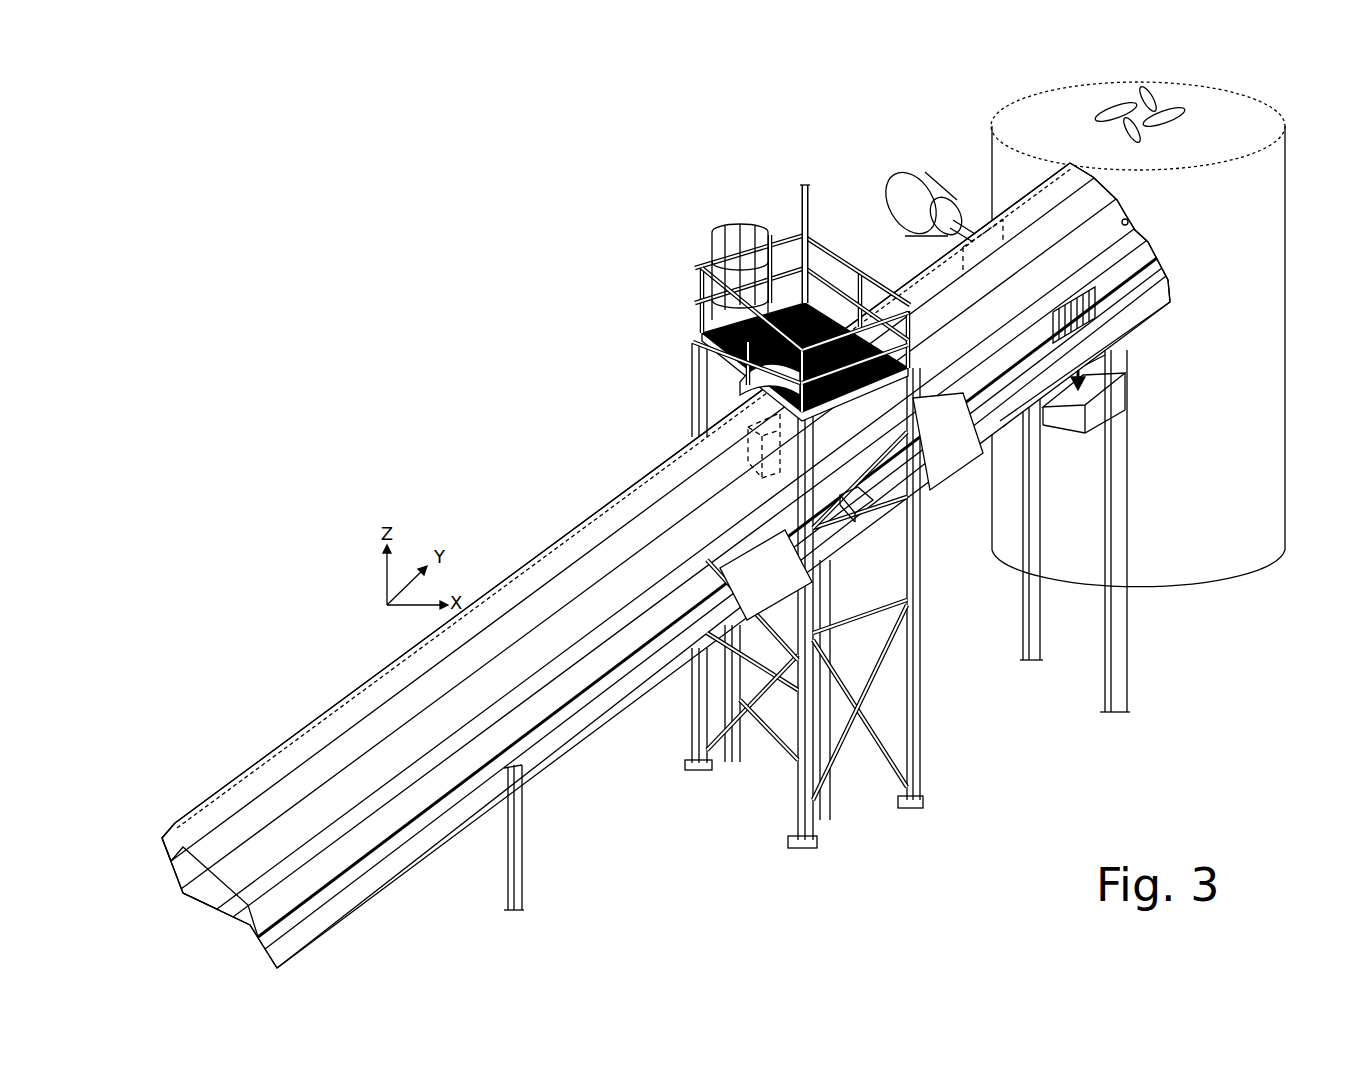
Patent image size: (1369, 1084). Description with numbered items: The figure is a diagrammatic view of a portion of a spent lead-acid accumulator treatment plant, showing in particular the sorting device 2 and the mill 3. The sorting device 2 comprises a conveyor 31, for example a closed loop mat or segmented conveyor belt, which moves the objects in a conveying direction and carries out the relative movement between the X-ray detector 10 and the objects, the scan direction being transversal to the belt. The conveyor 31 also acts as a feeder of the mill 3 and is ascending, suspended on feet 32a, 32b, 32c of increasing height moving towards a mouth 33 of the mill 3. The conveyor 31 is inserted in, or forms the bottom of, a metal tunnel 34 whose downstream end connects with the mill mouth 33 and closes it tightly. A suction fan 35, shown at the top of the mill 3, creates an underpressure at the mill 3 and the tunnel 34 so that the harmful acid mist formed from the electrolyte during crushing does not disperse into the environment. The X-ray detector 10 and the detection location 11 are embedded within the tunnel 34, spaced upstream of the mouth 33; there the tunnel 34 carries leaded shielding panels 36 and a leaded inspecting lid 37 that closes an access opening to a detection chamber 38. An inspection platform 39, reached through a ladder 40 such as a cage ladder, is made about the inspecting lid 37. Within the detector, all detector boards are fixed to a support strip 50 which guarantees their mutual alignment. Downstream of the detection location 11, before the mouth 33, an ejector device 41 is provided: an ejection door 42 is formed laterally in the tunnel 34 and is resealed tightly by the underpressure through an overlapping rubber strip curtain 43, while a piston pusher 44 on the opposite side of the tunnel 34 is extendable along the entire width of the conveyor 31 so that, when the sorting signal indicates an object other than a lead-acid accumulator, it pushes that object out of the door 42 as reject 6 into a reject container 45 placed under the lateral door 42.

The sorting device 2 is at (847, 113).
The mill 3 is at (693, 511).
The reject 6 is at (1088, 350).
The X-ray detector 10 is at (643, 445).
The detection location 11 is at (643, 445).
The detection chamber 38 is at (772, 425).
The conveyor 31 is at (180, 830).
The foot 32a is at (522, 848).
The foot 32b is at (920, 768).
The foot 32c is at (1128, 658).
The mouth 33 is at (1129, 222).
The metal tunnel 34 is at (250, 768).
The suction fan 35 is at (1107, 107).
The leaded shielding panels 36 is at (927, 468).
The leaded inspecting lid 37 is at (760, 368).
The inspection platform 39 is at (812, 308).
The ladder 40 is at (733, 237).
The ejector device 41 is at (897, 150).
The ejection door 42 is at (1162, 308).
The overlapping rubber strip curtain 43 is at (1078, 315).
The piston pusher 44 is at (900, 195).
The reject container 45 is at (1068, 413).
The support strip 50 is at (870, 508).